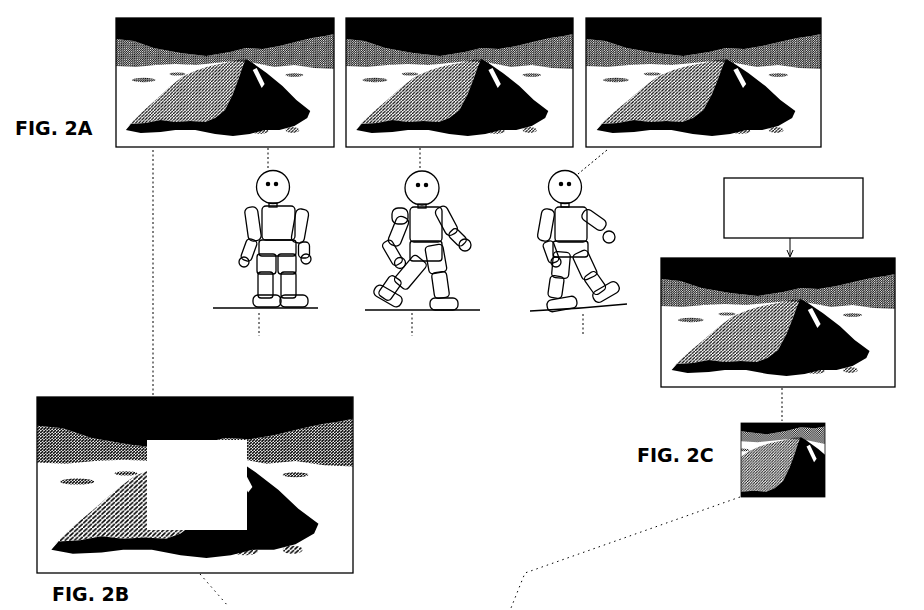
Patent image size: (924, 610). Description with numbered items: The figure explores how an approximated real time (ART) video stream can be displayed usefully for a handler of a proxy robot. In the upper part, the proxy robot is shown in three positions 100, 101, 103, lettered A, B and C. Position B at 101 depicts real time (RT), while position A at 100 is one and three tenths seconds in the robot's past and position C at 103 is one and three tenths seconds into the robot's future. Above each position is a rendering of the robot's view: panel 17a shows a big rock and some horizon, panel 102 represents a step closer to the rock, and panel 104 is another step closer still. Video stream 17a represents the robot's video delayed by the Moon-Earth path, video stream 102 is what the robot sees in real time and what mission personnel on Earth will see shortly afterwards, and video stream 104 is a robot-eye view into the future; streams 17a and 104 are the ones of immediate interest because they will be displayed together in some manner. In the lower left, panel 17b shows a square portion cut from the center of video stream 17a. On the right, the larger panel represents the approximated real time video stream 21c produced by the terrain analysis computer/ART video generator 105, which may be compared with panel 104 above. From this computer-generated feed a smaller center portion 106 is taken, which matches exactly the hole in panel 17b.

In FIG. 2A, the video stream panel 17a is at (207, 151).
In FIG. 2A, the video stream panel 102 is at (488, 150).
In FIG. 2A, the video stream panel 104 is at (643, 150).
In FIG. 2A, the proxy robot position 100 is at (245, 224).
In FIG. 2A, the proxy robot position 101 is at (392, 224).
In FIG. 2A, the proxy robot position 103 is at (540, 226).
In FIG. 2A, the terrain analysis computer/ART video generator 105 is at (726, 207).
In FIG. 2C, the approximated real time video stream 21c is at (697, 256).
In FIG. 2C, the center portion 106 is at (826, 453).
In FIG. 2B, the panel 17b is at (355, 491).